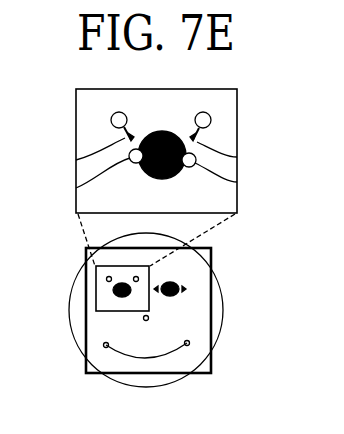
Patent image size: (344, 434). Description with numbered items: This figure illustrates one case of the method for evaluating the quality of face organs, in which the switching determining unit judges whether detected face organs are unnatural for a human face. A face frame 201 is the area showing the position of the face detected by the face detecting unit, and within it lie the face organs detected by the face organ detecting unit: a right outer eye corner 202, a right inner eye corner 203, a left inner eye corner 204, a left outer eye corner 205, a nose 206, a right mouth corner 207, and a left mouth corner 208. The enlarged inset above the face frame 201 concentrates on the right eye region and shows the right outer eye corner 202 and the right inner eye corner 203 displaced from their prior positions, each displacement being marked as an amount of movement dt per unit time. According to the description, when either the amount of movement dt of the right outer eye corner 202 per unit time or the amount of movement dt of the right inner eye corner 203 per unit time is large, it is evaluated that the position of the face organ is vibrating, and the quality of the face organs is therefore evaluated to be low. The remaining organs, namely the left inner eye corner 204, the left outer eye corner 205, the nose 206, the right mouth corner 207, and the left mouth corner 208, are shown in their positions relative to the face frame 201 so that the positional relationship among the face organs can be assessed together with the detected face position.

The face frame 201 is at (211, 255).
The right outer eye corner 202 is at (113, 289).
The right inner eye corner 203 is at (143, 318).
The left inner eye corner 204 is at (158, 292).
The left outer eye corner 205 is at (184, 288).
The nose 206 is at (148, 318).
The right mouth corner 207 is at (104, 346).
The left mouth corner 208 is at (188, 345).
The amount of movement per unit time dt is at (76, 160).